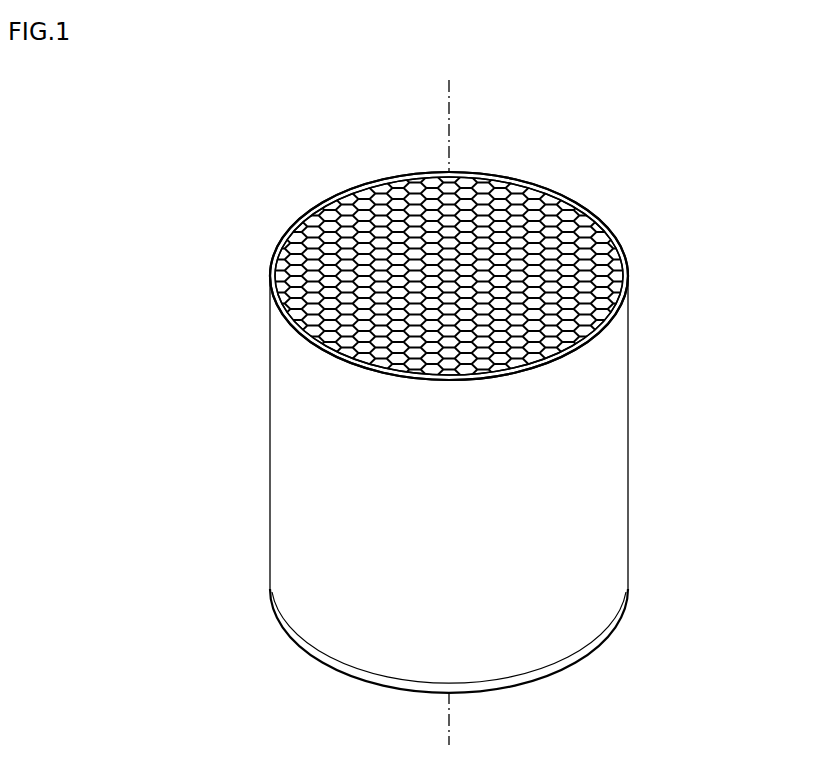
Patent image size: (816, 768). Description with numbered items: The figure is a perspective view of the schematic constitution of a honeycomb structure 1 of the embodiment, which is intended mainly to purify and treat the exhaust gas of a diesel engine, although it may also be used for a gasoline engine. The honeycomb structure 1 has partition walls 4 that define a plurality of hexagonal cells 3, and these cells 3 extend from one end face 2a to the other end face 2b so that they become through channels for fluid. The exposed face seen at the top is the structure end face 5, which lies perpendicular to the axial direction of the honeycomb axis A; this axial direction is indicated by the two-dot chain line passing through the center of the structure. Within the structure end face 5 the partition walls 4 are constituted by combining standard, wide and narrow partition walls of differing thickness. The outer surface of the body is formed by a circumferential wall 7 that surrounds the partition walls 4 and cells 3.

The honeycomb structure 1 is at (472, 431).
The one end face 2a is at (621, 277).
The structure end face 5 is at (449, 276).
The the other end face 2b is at (608, 640).
The hexagonal cell 3 is at (597, 318).
The partition wall 4 is at (432, 370).
The circumferential wall 7 is at (608, 452).
The honeycomb axis A is at (455, 120).